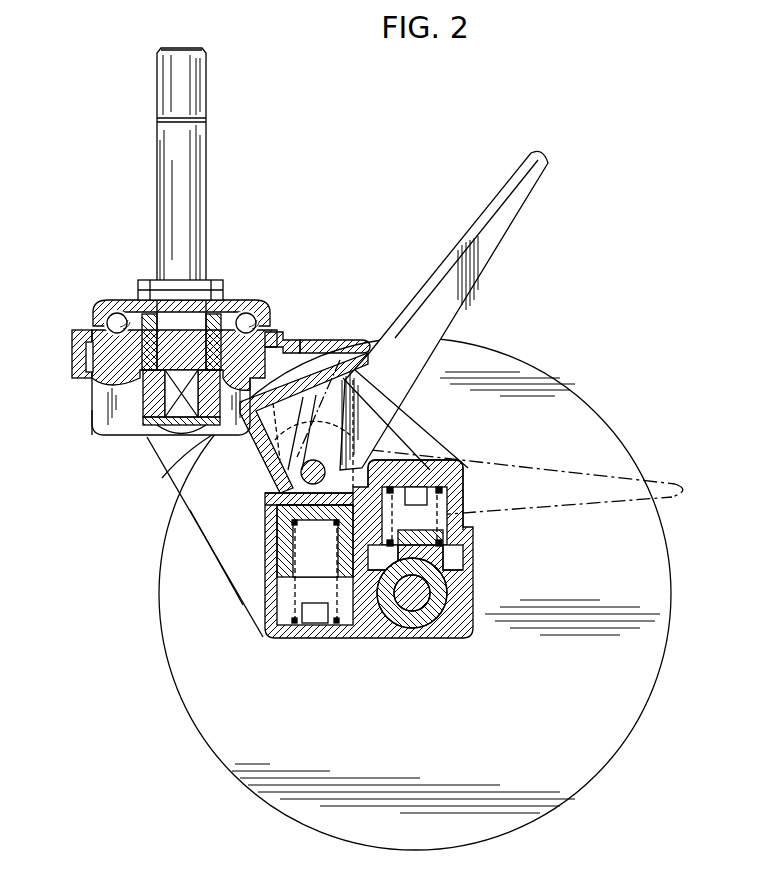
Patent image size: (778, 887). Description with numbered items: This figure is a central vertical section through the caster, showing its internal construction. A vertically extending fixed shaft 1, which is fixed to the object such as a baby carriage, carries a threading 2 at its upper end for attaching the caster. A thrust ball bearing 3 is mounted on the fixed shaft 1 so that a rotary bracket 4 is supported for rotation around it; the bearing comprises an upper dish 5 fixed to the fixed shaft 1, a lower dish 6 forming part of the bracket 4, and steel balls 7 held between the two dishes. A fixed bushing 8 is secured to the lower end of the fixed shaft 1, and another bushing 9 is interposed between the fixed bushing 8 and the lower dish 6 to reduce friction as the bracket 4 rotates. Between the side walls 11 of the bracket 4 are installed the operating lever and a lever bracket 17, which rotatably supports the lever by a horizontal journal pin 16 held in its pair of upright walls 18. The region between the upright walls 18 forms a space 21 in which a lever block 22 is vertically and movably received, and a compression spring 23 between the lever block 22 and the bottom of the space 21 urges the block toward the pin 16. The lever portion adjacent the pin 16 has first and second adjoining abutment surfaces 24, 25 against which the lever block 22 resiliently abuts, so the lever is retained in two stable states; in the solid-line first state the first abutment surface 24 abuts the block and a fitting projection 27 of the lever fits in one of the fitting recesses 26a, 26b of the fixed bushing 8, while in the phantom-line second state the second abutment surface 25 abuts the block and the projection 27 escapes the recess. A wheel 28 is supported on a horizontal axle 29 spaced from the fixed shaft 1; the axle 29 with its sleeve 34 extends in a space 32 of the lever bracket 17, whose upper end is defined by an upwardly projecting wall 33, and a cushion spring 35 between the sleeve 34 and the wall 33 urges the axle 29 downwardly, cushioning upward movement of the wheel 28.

The fixed shaft 1 is at (212, 156).
The threading 2 is at (208, 80).
The thrust ball bearing 3 is at (262, 300).
The bracket 4 is at (188, 517).
The upper dish 5 is at (228, 296).
The lower dish 6 is at (281, 330).
The steel balls 7 is at (97, 306).
The fixed bushing 8 is at (88, 400).
The bushing 9 is at (76, 352).
The side walls 11 is at (237, 573).
The journal pin 16 is at (266, 478).
The lever bracket 17 is at (342, 640).
The upright walls 18 is at (272, 493).
The space 21 is at (276, 606).
The lever block 22 is at (268, 521).
The compression spring 23 is at (292, 636).
The first abutment surface 24 is at (335, 493).
The second abutment surface 25 is at (388, 490).
The fitting recess 26a is at (185, 457).
The fitting recess 26b is at (92, 433).
The fitting projection 27 is at (313, 342).
The wheel 28 is at (590, 382).
The axle 29 is at (405, 630).
The space 32 is at (456, 578).
The wall 33 is at (442, 470).
The sleeve 34 is at (427, 626).
The cushion spring 35 is at (470, 553).